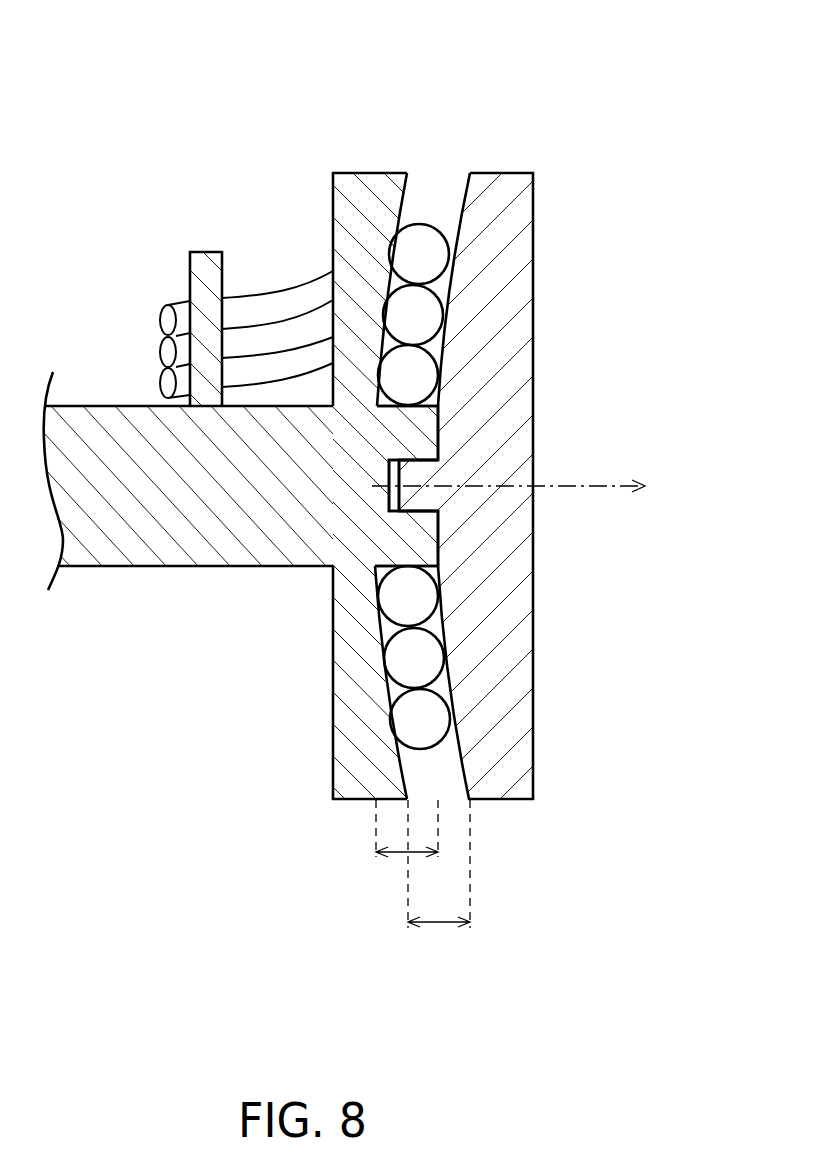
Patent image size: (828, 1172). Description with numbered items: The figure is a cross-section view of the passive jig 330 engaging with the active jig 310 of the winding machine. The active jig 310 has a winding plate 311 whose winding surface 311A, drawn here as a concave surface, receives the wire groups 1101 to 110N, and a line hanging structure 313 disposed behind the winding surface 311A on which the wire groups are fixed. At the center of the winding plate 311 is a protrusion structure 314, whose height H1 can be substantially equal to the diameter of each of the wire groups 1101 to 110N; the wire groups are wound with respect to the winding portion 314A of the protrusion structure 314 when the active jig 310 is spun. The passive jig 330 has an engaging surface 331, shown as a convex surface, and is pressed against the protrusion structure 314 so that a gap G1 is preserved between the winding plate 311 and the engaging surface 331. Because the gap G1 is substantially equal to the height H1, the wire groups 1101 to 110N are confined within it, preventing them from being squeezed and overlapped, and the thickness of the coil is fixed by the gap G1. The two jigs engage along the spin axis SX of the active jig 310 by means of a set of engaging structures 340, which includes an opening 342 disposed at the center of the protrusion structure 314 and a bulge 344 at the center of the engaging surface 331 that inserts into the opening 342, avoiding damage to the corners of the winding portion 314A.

The active jig 310 is at (376, 75).
The passive jig 330 is at (548, 75).
The winding plate 311 is at (353, 207).
The winding surface 311A is at (407, 195).
The engaging surface 331 is at (462, 212).
The line hanging structure 313 is at (207, 262).
The protrusion structure 314 is at (412, 536).
The winding portion 314A is at (425, 410).
The wire group 110N is at (415, 255).
The wire group 1101 is at (413, 372).
The set of engaging structures 340 is at (612, 512).
The bulge 344 is at (423, 495).
The opening 342 is at (410, 512).
The spin axis SX is at (532, 488).
The height of the protrusion structure H1 is at (400, 855).
The gap G1 is at (439, 882).